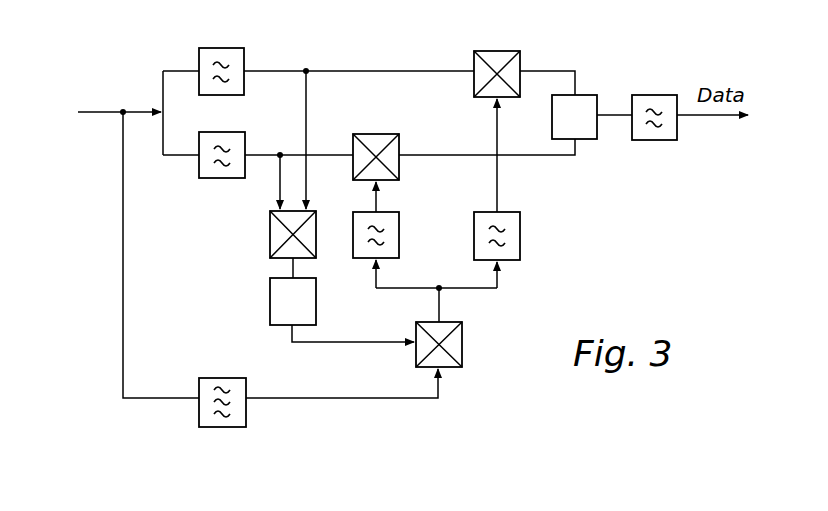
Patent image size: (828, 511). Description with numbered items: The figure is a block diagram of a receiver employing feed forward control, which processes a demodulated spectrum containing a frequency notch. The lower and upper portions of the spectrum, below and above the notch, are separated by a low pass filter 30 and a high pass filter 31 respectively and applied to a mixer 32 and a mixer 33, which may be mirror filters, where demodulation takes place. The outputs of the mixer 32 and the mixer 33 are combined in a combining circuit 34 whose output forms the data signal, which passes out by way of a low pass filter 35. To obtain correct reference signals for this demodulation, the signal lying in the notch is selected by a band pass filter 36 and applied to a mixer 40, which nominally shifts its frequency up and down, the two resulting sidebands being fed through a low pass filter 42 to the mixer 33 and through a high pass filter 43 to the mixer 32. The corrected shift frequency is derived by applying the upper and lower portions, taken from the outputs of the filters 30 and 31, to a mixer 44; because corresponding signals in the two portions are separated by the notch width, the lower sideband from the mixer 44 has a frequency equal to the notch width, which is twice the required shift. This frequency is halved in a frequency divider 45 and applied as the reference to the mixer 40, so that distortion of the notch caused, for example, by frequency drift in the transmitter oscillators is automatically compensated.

The low pass filter 30 is at (244, 53).
The high pass filter 31 is at (244, 138).
The mixer 32 is at (520, 58).
The mixer 33 is at (387, 125).
The combining circuit 34 is at (595, 95).
The low pass filter 35 is at (652, 95).
The band pass filter 36 is at (224, 378).
The mixer 40 is at (462, 342).
The low pass filter 42 is at (399, 237).
The high pass filter 43 is at (520, 237).
The mixer 44 is at (270, 233).
The frequency divider 45 is at (270, 298).